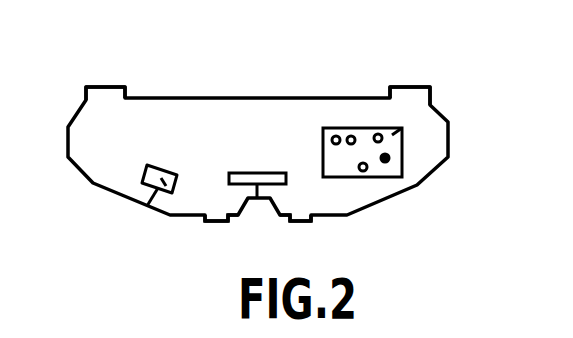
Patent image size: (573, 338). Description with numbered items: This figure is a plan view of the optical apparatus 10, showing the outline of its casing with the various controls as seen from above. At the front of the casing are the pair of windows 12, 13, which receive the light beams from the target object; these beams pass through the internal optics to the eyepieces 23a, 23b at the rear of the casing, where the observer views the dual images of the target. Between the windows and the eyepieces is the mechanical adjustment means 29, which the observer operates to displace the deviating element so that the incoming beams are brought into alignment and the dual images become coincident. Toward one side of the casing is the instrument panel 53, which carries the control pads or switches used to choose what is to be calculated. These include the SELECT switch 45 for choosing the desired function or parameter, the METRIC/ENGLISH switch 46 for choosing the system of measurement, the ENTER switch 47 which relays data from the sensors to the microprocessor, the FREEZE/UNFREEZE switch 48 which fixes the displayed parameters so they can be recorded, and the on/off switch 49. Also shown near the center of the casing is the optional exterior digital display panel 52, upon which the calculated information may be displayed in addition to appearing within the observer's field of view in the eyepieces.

The optical apparatus 10 is at (190, 74).
The window 12 is at (105, 87).
The window 13 is at (417, 87).
The eyepiece 23a is at (302, 223).
The eyepiece 23b is at (213, 223).
The mechanical adjustment means 29 is at (152, 203).
The SELECT switch 45 is at (377, 134).
The METRIC/ENGLISH switch 46 is at (351, 136).
The ENTER switch 47 is at (389, 158).
The FREEZE/UNFREEZE switch 48 is at (367, 179).
The on/off switch 49 is at (333, 136).
The exterior digital display panel 52 is at (258, 199).
The instrument panel 53 is at (392, 135).